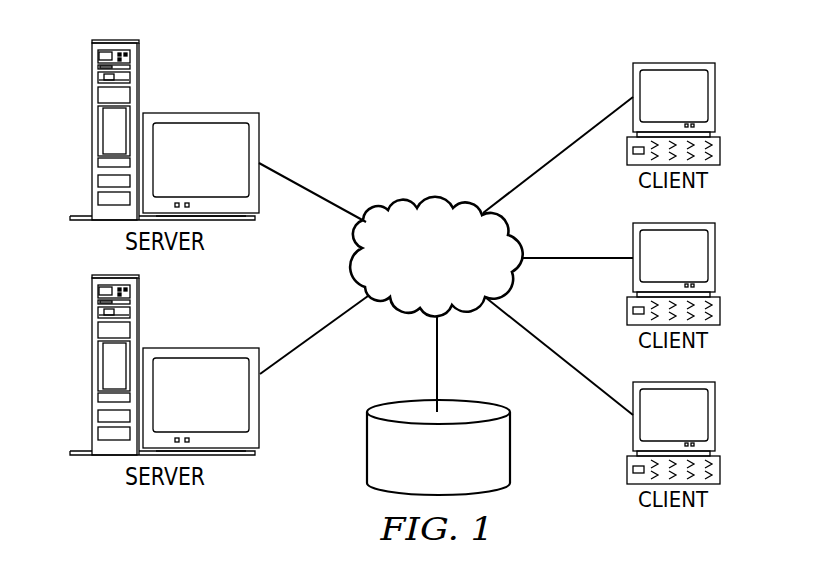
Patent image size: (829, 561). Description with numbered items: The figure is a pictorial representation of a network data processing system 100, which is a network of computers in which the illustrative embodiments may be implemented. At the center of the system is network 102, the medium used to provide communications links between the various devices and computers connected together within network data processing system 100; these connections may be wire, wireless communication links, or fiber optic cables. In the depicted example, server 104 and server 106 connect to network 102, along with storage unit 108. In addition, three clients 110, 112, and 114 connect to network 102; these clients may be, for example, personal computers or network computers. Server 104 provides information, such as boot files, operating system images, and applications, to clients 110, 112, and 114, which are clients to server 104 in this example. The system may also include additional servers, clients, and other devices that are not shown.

The network data processing system 100 is at (496, 82).
The network 102 is at (405, 200).
The server 104 is at (92, 130).
The server 106 is at (90, 367).
The storage unit 108 is at (367, 458).
The client 110 is at (715, 97).
The client 112 is at (715, 258).
The client 114 is at (715, 415).